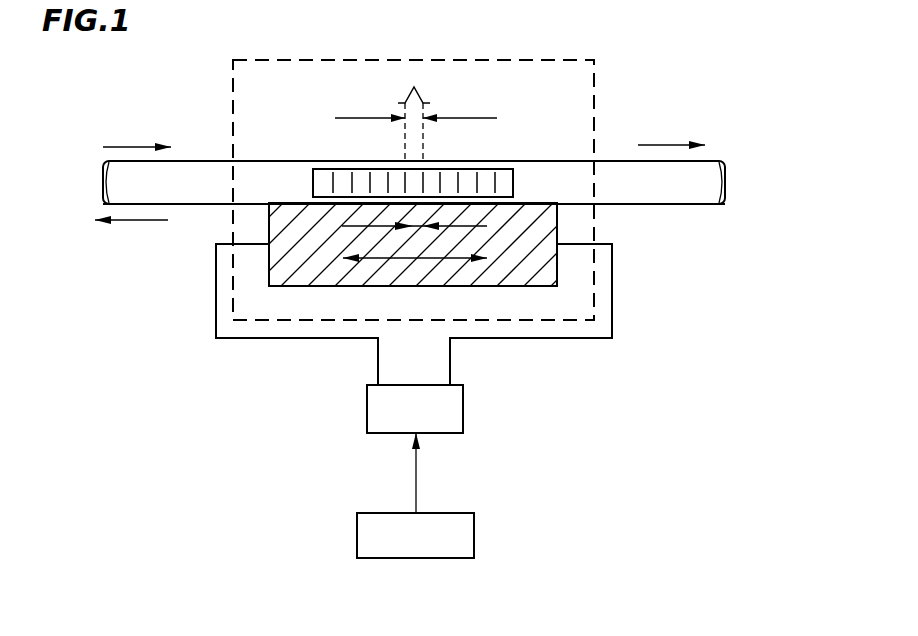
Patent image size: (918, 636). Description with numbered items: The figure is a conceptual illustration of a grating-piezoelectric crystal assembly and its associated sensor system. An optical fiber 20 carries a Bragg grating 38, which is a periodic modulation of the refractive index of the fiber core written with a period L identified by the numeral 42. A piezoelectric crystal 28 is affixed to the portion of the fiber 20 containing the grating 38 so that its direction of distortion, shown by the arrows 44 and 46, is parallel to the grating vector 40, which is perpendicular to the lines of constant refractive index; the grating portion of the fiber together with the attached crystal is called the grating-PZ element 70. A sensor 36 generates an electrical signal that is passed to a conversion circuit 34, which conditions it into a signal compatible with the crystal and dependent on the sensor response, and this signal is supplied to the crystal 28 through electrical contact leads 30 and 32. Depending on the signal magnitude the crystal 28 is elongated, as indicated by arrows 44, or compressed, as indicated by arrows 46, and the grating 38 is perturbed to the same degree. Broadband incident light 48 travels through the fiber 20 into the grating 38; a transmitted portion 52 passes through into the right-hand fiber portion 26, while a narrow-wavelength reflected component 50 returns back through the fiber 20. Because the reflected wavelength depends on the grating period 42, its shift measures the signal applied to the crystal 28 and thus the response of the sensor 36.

The optical fiber 20 is at (197, 194).
The optical fiber portion 26 is at (663, 190).
The piezoelectric crystal 28 is at (508, 275).
The electrical contact lead 30 is at (612, 291).
The electrical contact lead 32 is at (216, 305).
The conversion circuit 34 is at (463, 421).
The sensor 36 is at (474, 533).
The Bragg grating 38 is at (513, 186).
The grating vector 40 is at (466, 178).
The grating period L 42 is at (407, 130).
The elongation arrows 44 is at (424, 259).
The compression arrows 46 is at (486, 225).
The incident light 48 is at (133, 146).
The reflected light 50 is at (149, 221).
The transmitted light 52 is at (663, 144).
The grating-PZ element 70 is at (597, 99).